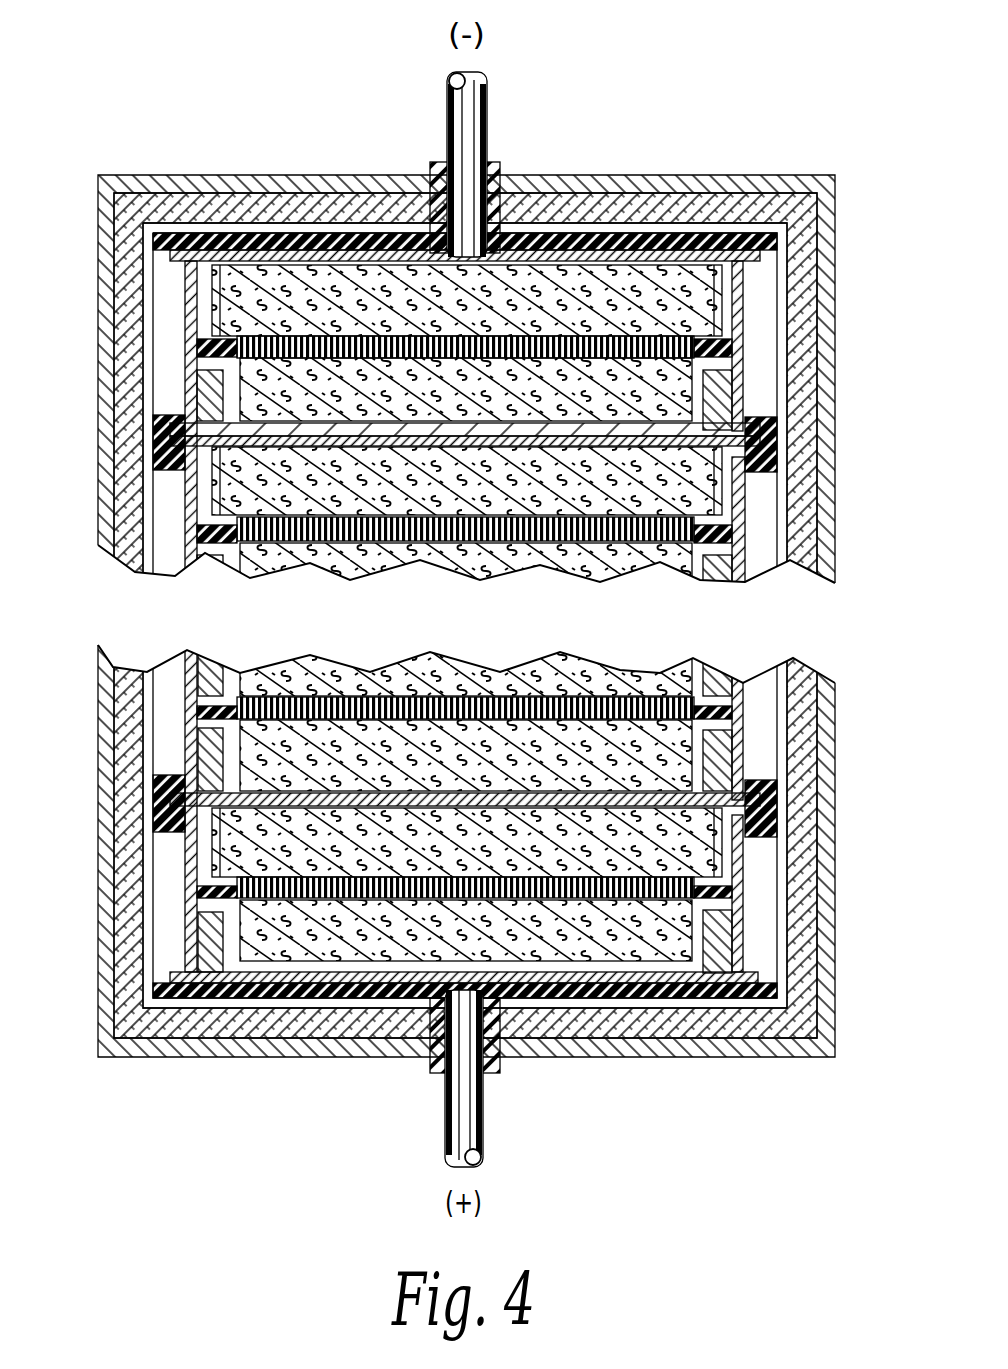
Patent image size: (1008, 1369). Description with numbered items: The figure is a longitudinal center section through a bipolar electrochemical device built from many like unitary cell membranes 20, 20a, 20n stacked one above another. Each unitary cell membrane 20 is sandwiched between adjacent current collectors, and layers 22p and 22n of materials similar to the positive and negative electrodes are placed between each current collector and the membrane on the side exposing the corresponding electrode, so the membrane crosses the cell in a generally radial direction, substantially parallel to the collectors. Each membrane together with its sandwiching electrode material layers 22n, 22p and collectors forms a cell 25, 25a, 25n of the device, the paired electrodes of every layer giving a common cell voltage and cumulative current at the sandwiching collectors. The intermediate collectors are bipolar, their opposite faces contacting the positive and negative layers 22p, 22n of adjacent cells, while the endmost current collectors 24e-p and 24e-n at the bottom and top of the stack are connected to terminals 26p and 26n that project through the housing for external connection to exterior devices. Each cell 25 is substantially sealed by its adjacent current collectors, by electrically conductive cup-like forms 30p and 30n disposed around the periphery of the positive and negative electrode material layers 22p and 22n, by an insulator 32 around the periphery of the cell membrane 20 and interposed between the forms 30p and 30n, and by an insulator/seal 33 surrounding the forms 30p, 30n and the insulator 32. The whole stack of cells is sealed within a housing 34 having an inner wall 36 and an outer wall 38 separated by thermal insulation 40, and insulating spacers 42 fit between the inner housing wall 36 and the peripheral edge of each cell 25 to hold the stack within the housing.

The unitary cell membrane 20 is at (627, 347).
The unitary cell membrane 20a is at (668, 532).
The unitary cell membrane 20n is at (667, 883).
The negative electrode material layer 22n is at (548, 293).
The positive electrode material layer 22p is at (690, 470).
The endmost negative current collector 24e-n is at (262, 245).
The endmost positive current collector 24e-p is at (215, 1000).
The cell 25 is at (752, 352).
The cell 25a is at (752, 522).
The cell 25n is at (752, 889).
The negative terminal 26n is at (447, 117).
The positive terminal 26p is at (483, 1125).
The negative cup-like form 30n is at (736, 292).
The positive cup-like form 30p is at (736, 412).
The insulator 32 is at (187, 347).
The insulator/seal 33 is at (153, 313).
The housing 34 is at (95, 517).
The inner housing wall 36 is at (140, 490).
The outer housing wall 38 is at (105, 777).
The thermal insulation 40 is at (130, 700).
The insulating spacer 42 is at (155, 418).